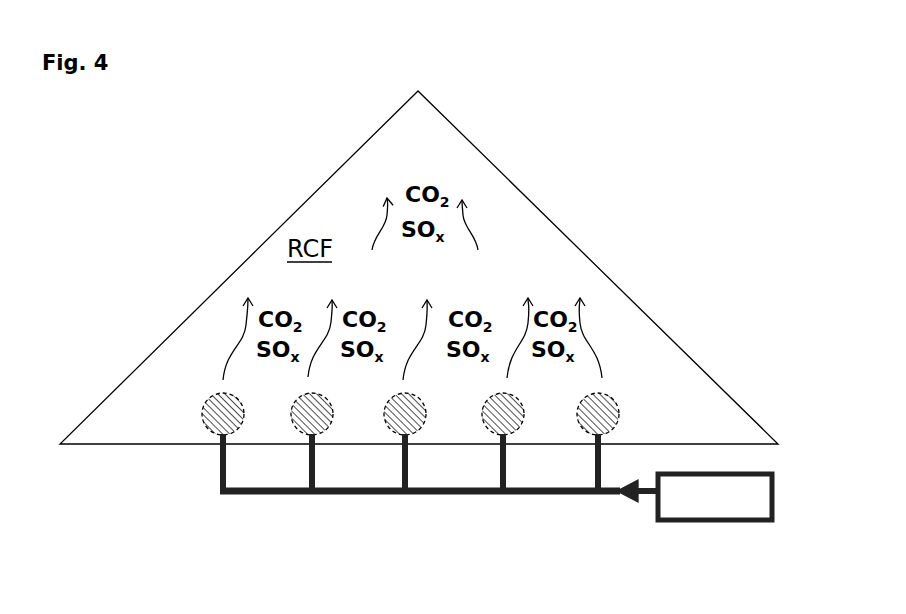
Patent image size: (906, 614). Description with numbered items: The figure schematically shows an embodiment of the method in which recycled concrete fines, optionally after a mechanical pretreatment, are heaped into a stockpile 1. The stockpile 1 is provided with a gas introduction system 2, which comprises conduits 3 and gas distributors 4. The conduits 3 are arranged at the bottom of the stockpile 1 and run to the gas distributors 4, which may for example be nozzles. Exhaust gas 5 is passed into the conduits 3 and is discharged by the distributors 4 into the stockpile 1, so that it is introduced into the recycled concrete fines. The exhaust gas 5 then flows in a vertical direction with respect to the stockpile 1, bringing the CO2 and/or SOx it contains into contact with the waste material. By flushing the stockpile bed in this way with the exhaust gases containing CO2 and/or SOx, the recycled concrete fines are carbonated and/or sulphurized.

The stockpile 1 is at (492, 162).
The gas introduction system 2 is at (423, 510).
The conduits 3 is at (597, 458).
The gas distributors 4 is at (563, 435).
The exhaust gas 5 is at (694, 497).